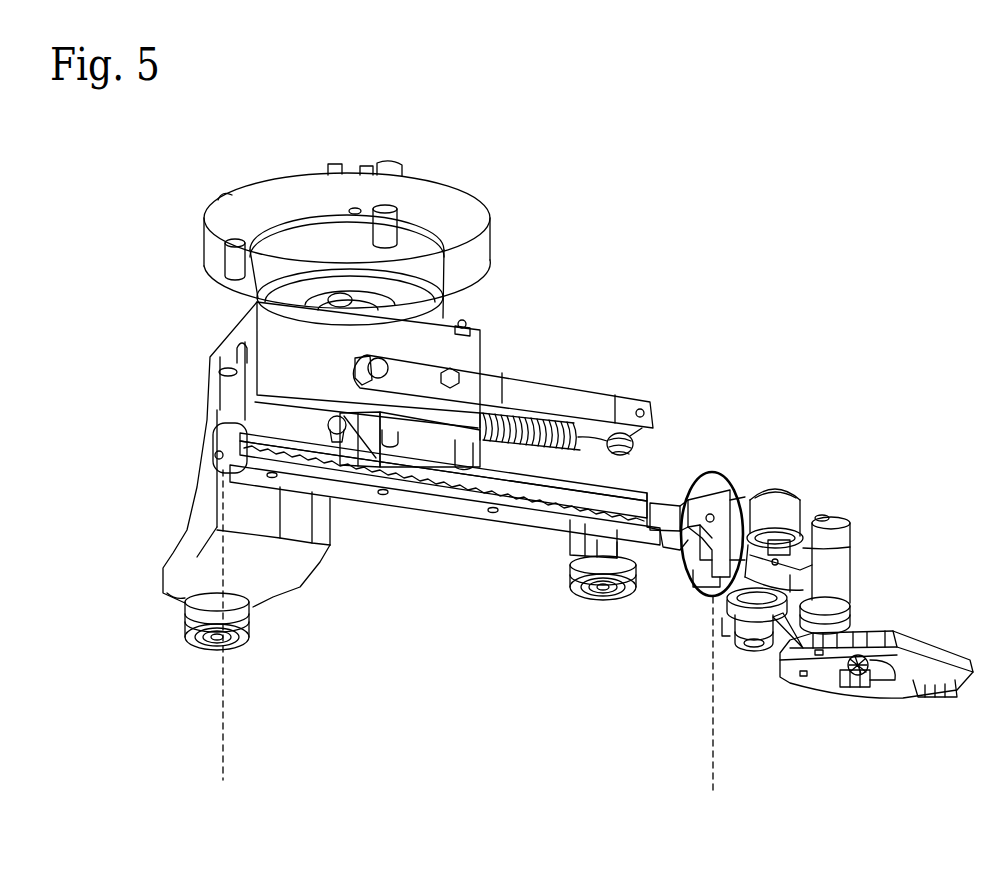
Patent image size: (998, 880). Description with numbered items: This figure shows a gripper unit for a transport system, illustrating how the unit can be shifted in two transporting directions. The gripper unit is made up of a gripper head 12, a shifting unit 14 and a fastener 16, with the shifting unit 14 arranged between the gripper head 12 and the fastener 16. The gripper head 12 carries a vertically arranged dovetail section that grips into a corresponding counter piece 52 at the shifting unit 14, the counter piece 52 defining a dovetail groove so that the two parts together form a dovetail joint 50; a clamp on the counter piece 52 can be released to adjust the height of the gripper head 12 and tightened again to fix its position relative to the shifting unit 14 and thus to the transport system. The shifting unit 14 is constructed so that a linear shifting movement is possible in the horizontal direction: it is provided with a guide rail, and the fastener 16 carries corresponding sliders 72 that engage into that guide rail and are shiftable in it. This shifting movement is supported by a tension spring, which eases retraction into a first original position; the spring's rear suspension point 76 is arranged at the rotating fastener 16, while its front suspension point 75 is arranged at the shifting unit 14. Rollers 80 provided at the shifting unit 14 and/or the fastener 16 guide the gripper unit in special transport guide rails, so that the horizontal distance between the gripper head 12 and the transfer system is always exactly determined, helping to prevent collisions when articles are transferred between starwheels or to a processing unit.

The gripper head 12 is at (980, 792).
The shifting unit 14 is at (406, 626).
The fastener 16 is at (362, 454).
The dovetail joint 50 is at (701, 597).
The corresponding counter piece 52 is at (718, 468).
The sliders 72 is at (440, 483).
The front suspension point 75 is at (227, 372).
The rear suspension point 76 is at (639, 409).
The rollers 80 is at (187, 627).